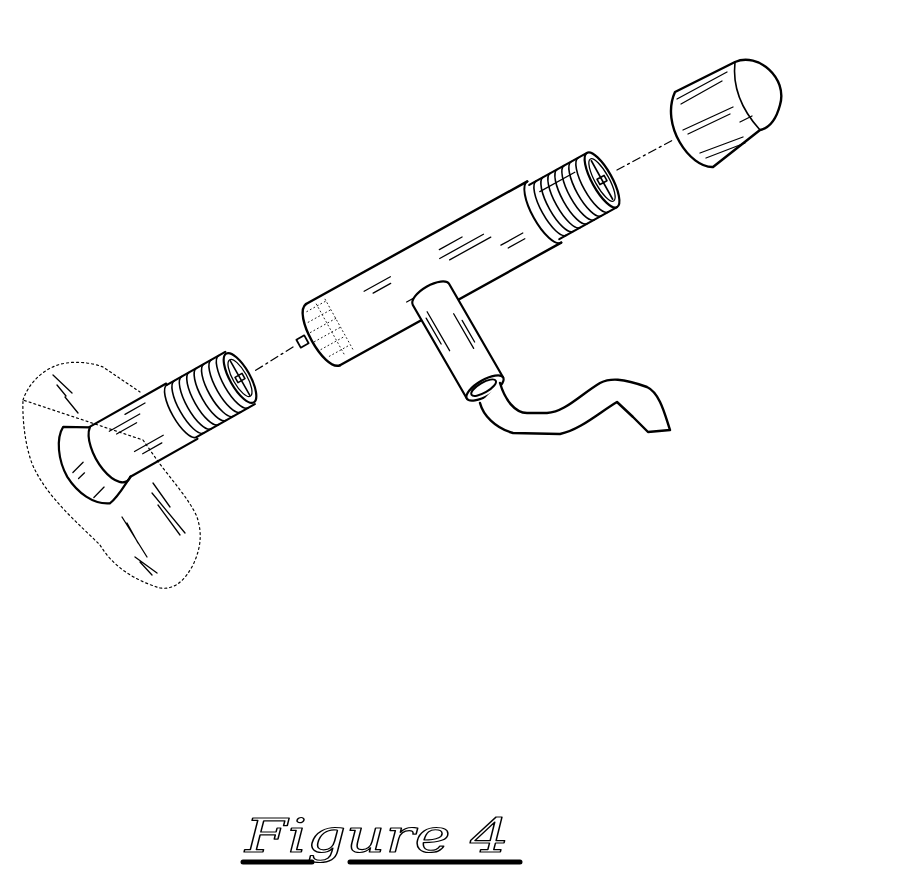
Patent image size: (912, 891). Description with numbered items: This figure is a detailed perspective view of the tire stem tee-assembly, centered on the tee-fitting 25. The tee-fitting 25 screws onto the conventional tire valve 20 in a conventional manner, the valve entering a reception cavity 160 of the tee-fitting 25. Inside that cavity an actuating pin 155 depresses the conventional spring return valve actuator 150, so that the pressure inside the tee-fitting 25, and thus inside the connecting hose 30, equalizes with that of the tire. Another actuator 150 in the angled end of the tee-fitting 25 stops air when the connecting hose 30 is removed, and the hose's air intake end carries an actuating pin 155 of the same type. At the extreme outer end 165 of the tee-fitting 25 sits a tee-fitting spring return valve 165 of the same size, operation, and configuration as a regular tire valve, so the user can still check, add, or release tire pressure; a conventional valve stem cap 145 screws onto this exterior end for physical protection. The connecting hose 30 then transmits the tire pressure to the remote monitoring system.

The conventional tire valve 20 is at (142, 390).
The tee-fitting 25 is at (420, 253).
The connecting hose 30 is at (627, 392).
The valve stem cap 145 is at (737, 133).
The spring return valve actuator 150 is at (253, 402).
The actuating pin 155 is at (300, 340).
The reception cavity 160 is at (343, 350).
The tee-fitting spring return valve 165 is at (600, 163).